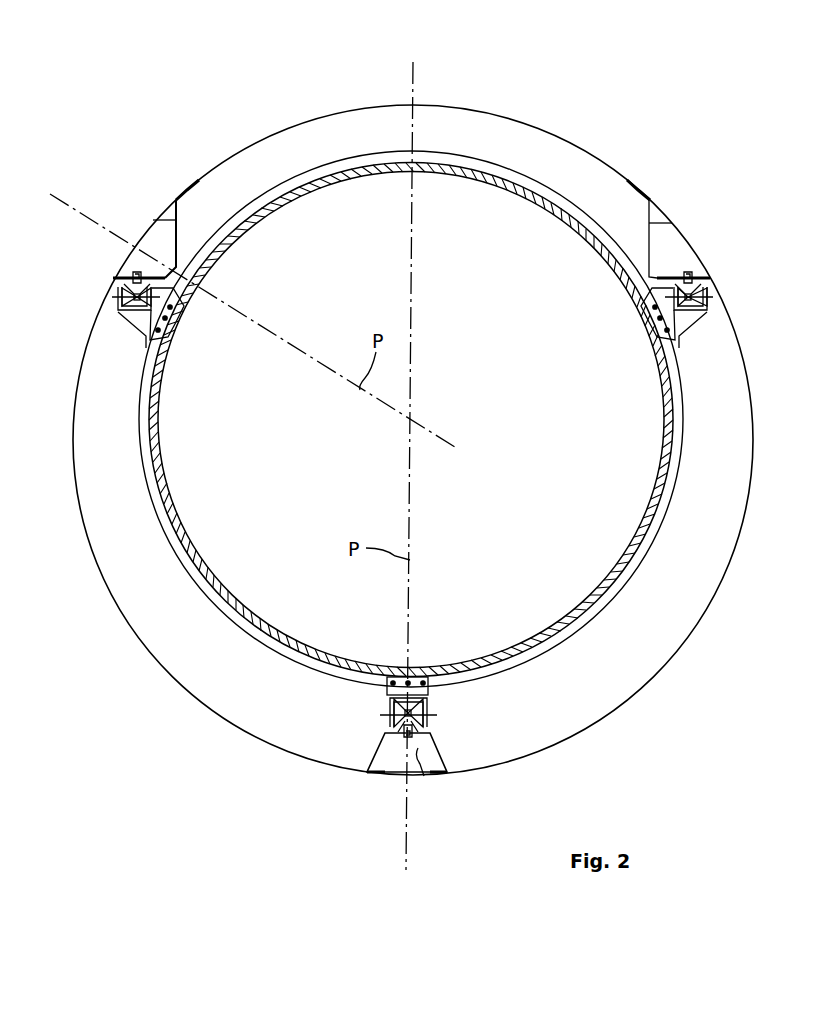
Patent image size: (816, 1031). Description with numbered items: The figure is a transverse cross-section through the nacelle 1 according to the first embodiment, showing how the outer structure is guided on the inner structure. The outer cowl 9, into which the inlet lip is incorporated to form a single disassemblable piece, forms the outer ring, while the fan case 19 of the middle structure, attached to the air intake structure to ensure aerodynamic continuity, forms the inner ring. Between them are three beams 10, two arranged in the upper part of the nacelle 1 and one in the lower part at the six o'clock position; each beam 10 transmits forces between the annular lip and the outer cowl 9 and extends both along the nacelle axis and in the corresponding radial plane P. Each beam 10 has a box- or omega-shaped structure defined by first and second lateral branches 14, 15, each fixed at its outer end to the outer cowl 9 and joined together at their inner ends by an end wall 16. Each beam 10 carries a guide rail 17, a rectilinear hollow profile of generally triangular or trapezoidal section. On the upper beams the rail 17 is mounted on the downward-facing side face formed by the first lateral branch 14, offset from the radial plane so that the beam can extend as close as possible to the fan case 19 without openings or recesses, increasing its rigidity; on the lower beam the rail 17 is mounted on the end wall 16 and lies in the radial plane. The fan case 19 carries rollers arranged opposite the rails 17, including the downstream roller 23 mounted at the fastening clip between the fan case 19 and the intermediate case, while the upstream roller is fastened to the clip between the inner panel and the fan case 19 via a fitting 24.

The nacelle 1 is at (256, 85).
The outer cowl 9 is at (368, 107).
The beam 10 is at (152, 220).
The first lateral branch 14 is at (125, 258).
The second lateral branch 15 is at (425, 752).
The end wall 16 is at (178, 300).
The guide rail 17 is at (120, 283).
The fan case 19 is at (170, 495).
The downstream roller 23 is at (118, 302).
The fitting 24 is at (142, 330).